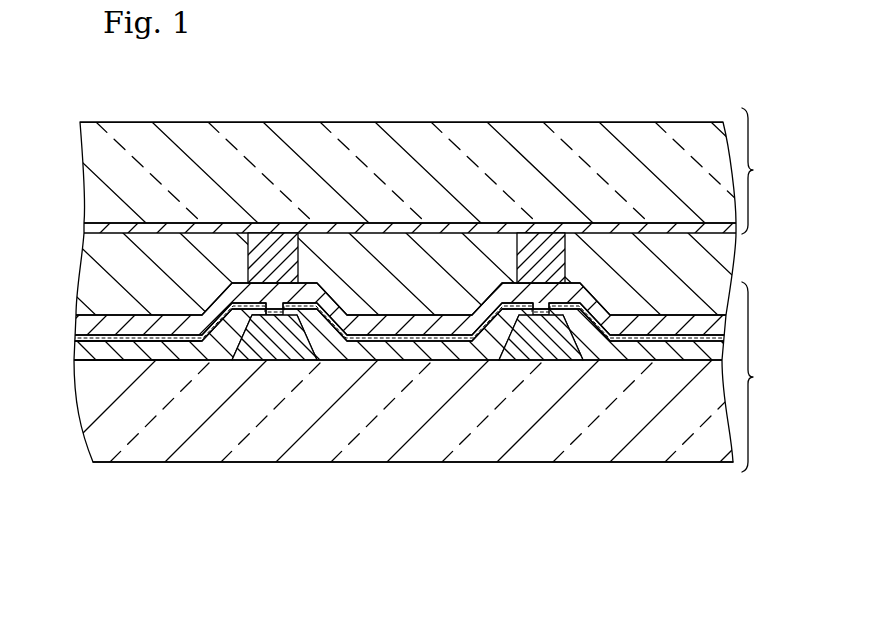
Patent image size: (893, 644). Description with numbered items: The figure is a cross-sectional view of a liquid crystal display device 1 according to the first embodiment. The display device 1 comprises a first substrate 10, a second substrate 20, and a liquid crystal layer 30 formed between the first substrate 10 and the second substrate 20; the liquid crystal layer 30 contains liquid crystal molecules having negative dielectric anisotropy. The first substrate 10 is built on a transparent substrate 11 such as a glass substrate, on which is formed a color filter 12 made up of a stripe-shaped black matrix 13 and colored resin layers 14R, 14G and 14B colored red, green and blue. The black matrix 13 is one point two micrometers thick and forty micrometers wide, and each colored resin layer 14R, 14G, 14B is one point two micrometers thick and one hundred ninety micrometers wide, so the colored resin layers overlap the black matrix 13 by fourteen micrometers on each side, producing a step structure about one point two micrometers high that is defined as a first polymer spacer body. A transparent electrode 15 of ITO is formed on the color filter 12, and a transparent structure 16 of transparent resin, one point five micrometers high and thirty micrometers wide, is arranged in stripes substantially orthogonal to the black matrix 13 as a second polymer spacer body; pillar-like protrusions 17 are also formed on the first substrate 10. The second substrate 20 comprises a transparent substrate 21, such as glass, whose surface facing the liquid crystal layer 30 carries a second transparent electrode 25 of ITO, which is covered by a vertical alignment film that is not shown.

The liquid crystal display device 1 is at (676, 478).
The first substrate 10 is at (444, 377).
The transparent substrate 11 is at (510, 430).
The color filter 12 is at (82, 352).
The black matrix 13 is at (272, 347).
The colored resin layer 14R is at (155, 350).
The colored resin layer 14G is at (412, 353).
The colored resin layer 14B is at (627, 353).
The transparent electrode 15 is at (115, 337).
The transparent structure 16 is at (108, 308).
The pillar-like protrusions 17 is at (270, 243).
The second substrate 20 is at (428, 171).
The transparent substrate 21 is at (495, 160).
The second transparent electrode 25 is at (642, 225).
The liquid crystal layer 30 is at (690, 262).